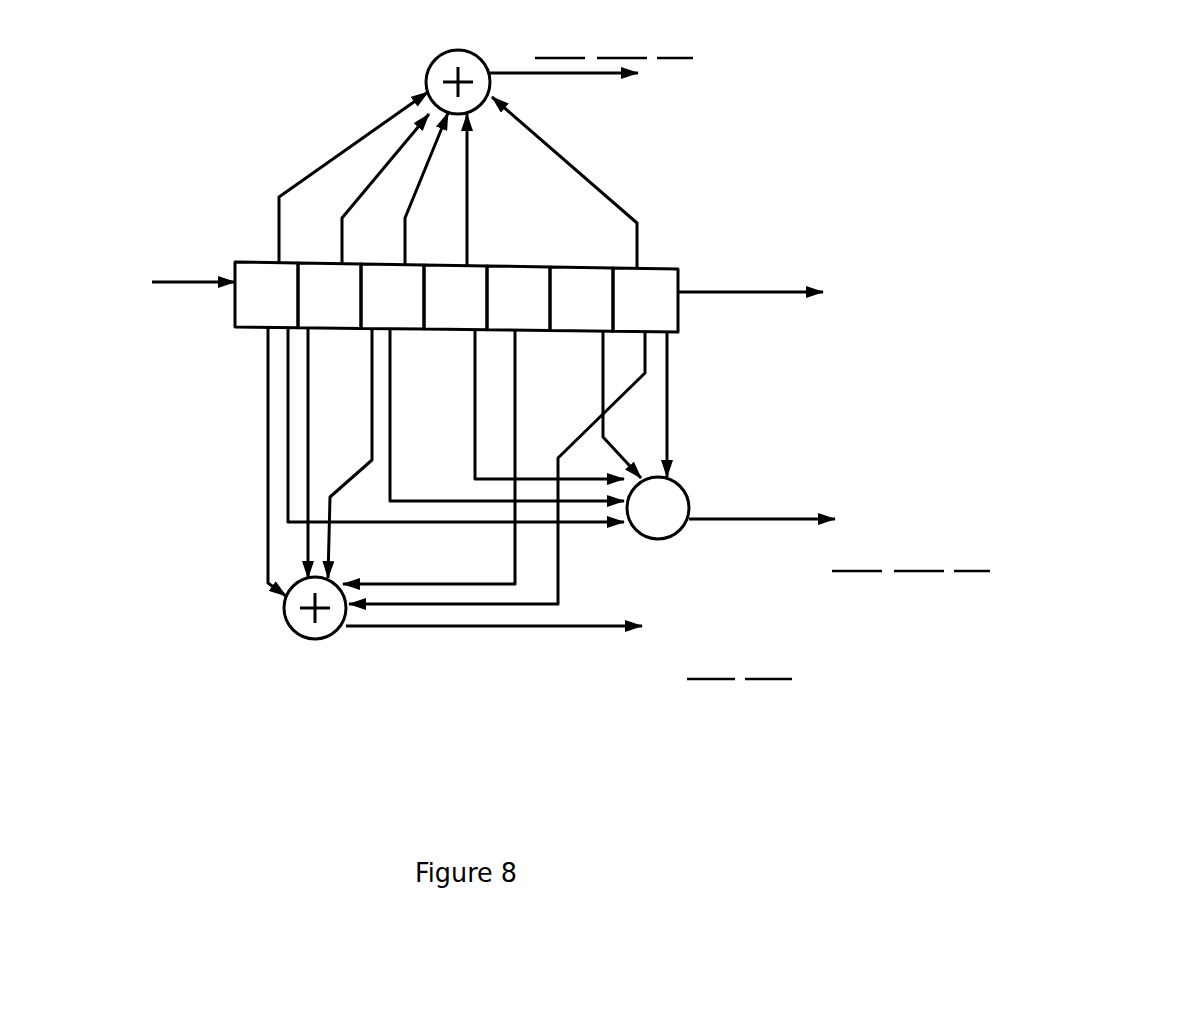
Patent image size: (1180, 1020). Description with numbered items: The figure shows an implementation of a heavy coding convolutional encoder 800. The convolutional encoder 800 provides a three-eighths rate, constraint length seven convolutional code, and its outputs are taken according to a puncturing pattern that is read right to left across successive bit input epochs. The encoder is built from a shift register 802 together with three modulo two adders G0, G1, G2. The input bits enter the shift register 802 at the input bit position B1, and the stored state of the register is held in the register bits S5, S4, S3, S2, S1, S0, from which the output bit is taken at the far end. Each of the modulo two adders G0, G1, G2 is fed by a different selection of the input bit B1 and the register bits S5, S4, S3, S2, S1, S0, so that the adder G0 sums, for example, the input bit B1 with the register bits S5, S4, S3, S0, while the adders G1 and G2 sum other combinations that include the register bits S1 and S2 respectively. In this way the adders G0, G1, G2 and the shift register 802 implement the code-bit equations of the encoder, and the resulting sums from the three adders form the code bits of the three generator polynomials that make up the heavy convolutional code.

The heavy coding convolutional encoder 800 is at (637, 428).
The shift register 802 is at (393, 413).
The modulo two adder G0 is at (439, 78).
The modulo two adder G1 is at (645, 523).
The modulo two adder G2 is at (295, 610).
The input bit B1 is at (266, 295).
The shift register bit S5 is at (329, 295).
The shift register bit S4 is at (392, 296).
The shift register bit S3 is at (455, 297).
The shift register bit S2 is at (518, 298).
The shift register bit S1 is at (581, 299).
The shift register bit S0 is at (645, 300).